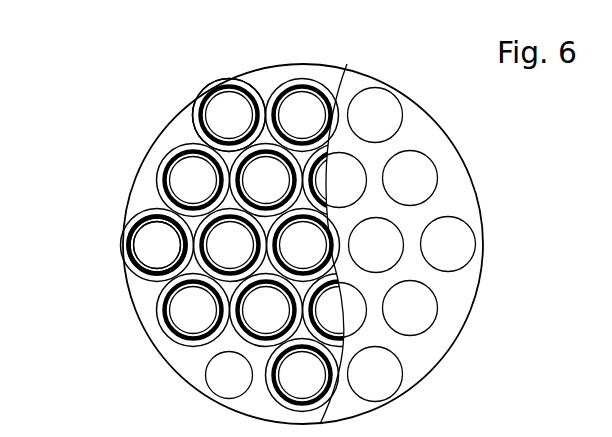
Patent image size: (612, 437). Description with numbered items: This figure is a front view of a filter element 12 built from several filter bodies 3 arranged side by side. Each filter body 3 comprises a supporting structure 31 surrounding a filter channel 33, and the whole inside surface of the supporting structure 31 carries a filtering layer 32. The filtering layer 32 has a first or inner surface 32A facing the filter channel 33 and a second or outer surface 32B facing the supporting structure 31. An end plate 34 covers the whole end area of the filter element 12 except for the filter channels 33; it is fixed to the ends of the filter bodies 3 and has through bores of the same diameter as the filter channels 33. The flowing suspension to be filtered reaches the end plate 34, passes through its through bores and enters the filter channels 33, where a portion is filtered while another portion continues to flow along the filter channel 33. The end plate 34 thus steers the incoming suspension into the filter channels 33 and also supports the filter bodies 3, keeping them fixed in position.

The filter body 3 is at (171, 149).
The filter element 12 is at (483, 271).
The supporting structure 31 is at (242, 80).
The filtering layer 32 is at (155, 275).
The first/inner surface 32A is at (128, 252).
The second/outer surface 32B is at (133, 273).
The filter channel 33 is at (228, 372).
The end plate 34 is at (448, 283).